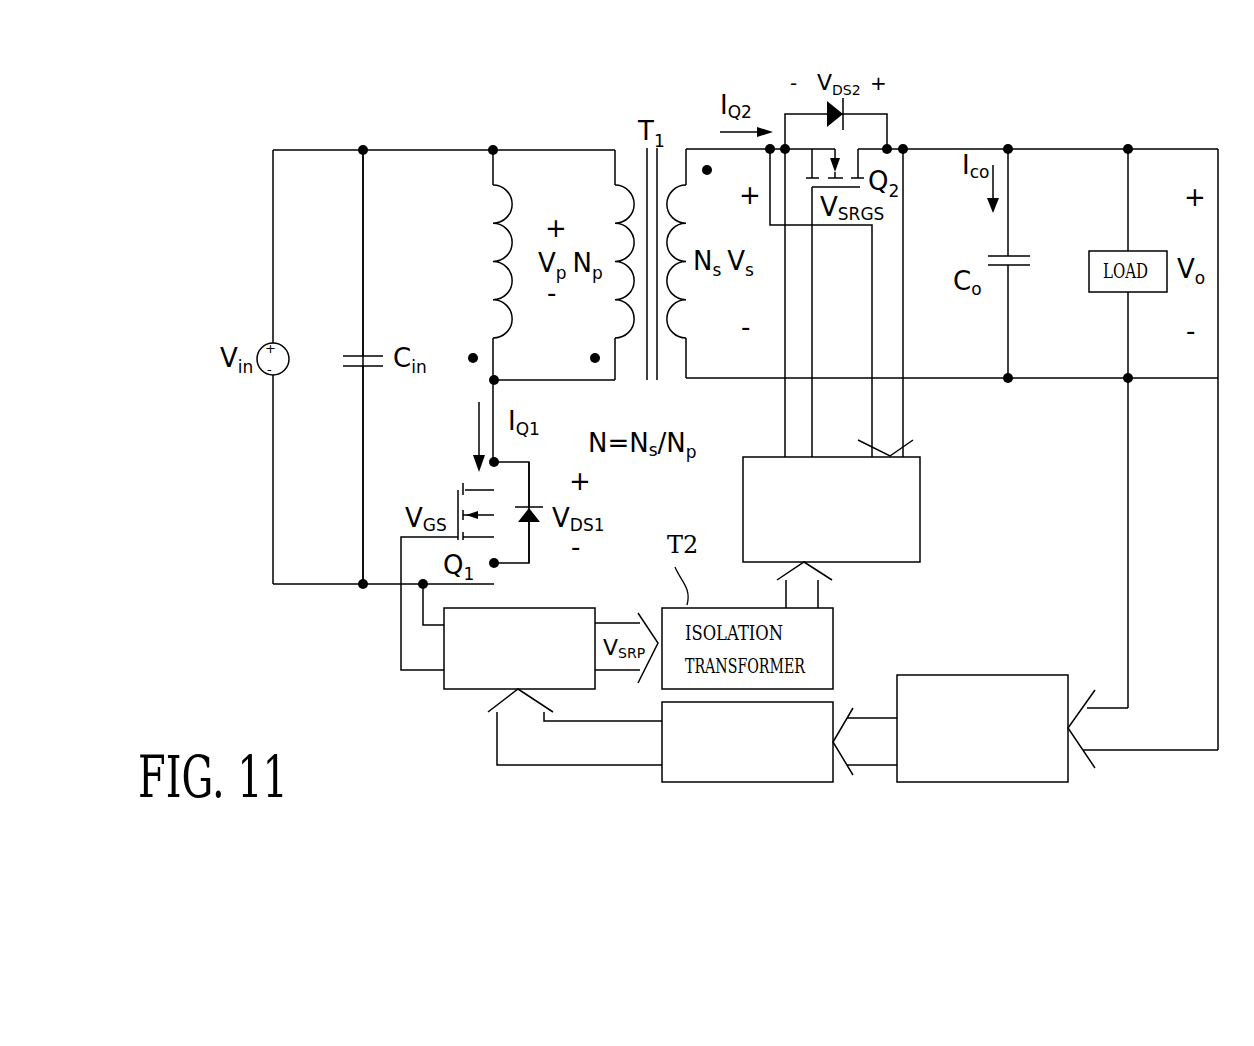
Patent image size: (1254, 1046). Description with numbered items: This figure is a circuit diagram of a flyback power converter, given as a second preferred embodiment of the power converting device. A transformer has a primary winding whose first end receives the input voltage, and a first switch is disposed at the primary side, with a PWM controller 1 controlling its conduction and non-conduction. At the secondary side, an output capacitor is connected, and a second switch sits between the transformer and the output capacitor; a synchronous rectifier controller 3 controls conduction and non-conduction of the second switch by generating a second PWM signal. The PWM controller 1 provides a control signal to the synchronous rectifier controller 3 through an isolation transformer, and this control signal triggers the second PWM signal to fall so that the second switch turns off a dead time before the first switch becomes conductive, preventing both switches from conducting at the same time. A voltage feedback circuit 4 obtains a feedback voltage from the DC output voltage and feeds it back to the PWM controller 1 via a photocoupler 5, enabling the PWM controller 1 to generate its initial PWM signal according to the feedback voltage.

The PWM controller 1 is at (563, 613).
The synchronous rectifier controller 3 is at (743, 512).
The voltage feedback circuit 4 is at (987, 677).
The photocoupler 5 is at (830, 710).